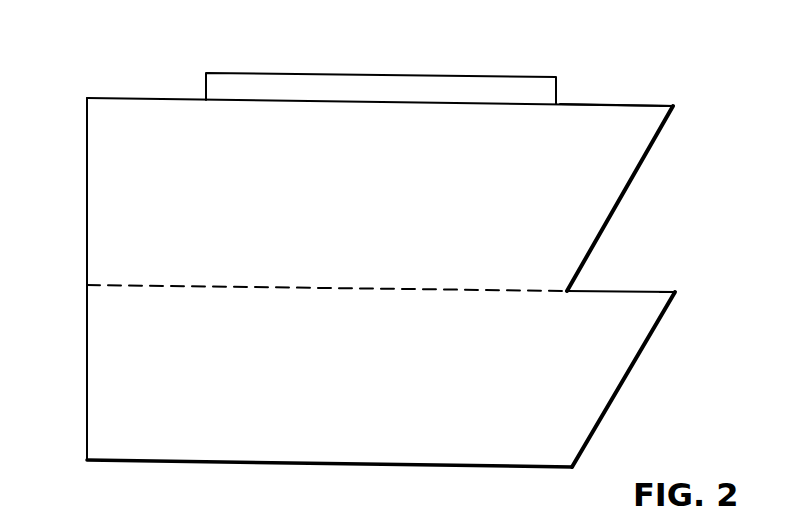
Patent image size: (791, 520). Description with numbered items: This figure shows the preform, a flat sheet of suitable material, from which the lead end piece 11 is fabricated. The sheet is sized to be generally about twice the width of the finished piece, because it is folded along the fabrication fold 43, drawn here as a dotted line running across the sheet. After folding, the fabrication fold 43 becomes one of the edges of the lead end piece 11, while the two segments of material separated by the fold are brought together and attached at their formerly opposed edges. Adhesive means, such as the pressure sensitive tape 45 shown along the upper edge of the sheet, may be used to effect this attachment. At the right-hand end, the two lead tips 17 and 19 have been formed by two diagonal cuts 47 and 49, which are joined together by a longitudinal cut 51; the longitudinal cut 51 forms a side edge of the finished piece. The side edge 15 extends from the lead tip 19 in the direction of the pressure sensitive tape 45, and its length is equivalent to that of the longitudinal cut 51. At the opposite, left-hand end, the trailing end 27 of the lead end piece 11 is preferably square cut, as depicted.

The lead end piece 11 is at (173, 118).
The side edge 15 is at (624, 105).
The lead tip 17 is at (676, 292).
The lead tip 19 is at (673, 107).
The trailing end 27 is at (86, 443).
The fabrication fold 43 is at (218, 287).
The pressure sensitive tape 45 is at (360, 87).
The diagonal cut 47 is at (617, 387).
The diagonal cut 49 is at (617, 205).
The longitudinal cut 51 is at (607, 291).